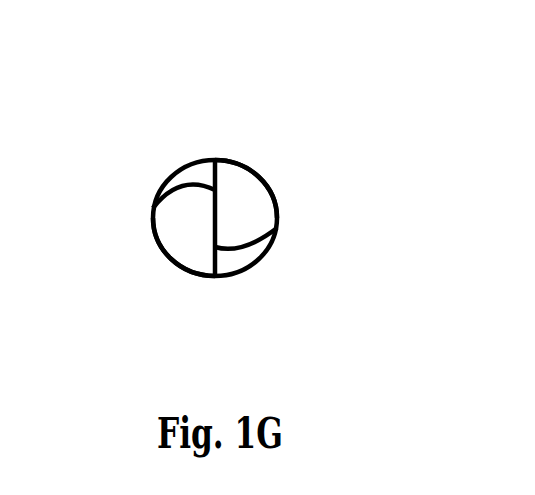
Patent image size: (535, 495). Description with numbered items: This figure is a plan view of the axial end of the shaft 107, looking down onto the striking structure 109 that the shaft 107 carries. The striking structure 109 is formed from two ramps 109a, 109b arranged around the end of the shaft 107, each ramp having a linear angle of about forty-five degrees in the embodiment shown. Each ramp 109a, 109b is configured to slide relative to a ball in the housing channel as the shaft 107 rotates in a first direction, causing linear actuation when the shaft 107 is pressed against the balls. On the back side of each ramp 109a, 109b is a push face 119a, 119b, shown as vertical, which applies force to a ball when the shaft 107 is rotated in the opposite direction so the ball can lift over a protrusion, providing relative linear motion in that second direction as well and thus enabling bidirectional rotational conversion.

The striking structure 109 is at (144, 77).
The shaft 107 is at (217, 160).
The ramp 109a is at (245, 213).
The ramp 109b is at (192, 235).
The push face 119a is at (215, 260).
The push face 119b is at (220, 175).